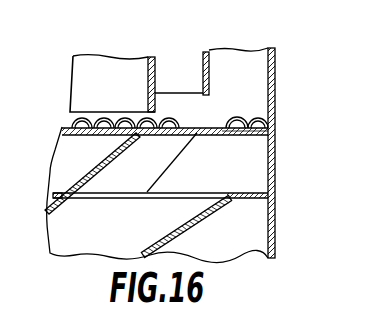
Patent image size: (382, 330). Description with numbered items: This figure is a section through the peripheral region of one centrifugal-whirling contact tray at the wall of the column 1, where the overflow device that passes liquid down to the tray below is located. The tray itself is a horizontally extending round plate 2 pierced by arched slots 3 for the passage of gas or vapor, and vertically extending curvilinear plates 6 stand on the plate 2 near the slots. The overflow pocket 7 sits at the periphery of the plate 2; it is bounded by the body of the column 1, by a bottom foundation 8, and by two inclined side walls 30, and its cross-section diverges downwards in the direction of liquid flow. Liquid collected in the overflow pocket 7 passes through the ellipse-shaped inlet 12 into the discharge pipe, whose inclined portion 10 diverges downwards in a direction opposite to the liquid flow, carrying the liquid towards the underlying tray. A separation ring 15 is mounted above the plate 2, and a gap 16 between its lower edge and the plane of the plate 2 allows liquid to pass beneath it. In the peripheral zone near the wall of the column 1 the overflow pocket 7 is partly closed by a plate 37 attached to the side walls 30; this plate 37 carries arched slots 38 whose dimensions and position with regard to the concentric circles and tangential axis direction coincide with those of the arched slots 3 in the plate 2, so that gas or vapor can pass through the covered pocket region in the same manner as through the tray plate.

The column 1 is at (275, 83).
The round plate 2 is at (84, 133).
The arched slots 3 is at (103, 117).
The curvilinear plates 6 is at (148, 76).
The overflow pocket 7 is at (260, 165).
The bottom foundation 8 is at (251, 200).
The inclined portion 10 is at (223, 208).
The ellipse-shaped inlet 12 is at (180, 198).
The separation ring 15 is at (209, 63).
The gap 16 is at (207, 103).
The inclined side walls 30 is at (106, 164).
The plate 37 is at (229, 134).
The arched slots 38 is at (268, 113).